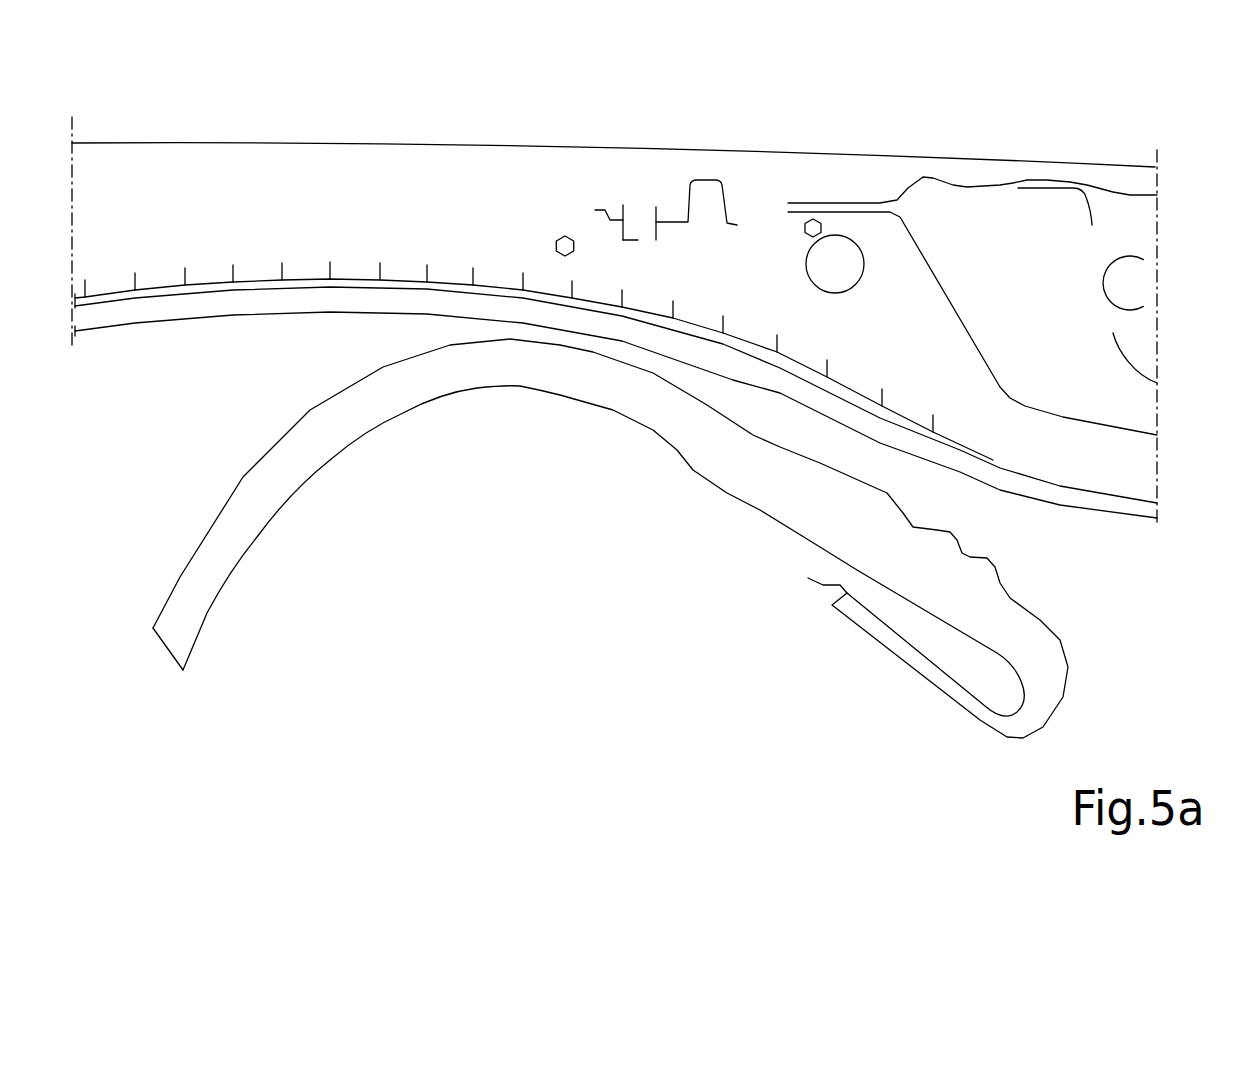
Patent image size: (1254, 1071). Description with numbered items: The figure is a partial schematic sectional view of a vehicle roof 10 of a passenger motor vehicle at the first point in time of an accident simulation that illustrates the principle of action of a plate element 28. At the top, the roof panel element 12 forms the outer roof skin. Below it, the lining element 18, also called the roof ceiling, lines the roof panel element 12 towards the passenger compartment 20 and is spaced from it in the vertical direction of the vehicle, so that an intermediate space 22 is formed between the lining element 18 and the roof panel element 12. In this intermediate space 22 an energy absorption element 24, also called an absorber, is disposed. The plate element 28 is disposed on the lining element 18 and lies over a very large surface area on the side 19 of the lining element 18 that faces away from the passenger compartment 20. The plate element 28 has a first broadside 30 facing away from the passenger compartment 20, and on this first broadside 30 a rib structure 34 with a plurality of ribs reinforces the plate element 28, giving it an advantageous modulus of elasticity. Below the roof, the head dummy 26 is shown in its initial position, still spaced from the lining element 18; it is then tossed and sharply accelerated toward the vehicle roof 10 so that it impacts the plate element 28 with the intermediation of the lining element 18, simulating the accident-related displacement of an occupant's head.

The vehicle roof 10 is at (867, 129).
The roof panel element 12 is at (657, 143).
The lining element 18 is at (1127, 512).
The side of the lining element 19 is at (208, 285).
The passenger compartment 20 is at (205, 422).
The intermediate space 22 is at (425, 218).
The energy absorption element 24 is at (616, 358).
The head dummy 26 is at (253, 543).
The plate element 28 is at (296, 283).
The first broadside 30 is at (514, 243).
The rib structure 34 is at (740, 298).